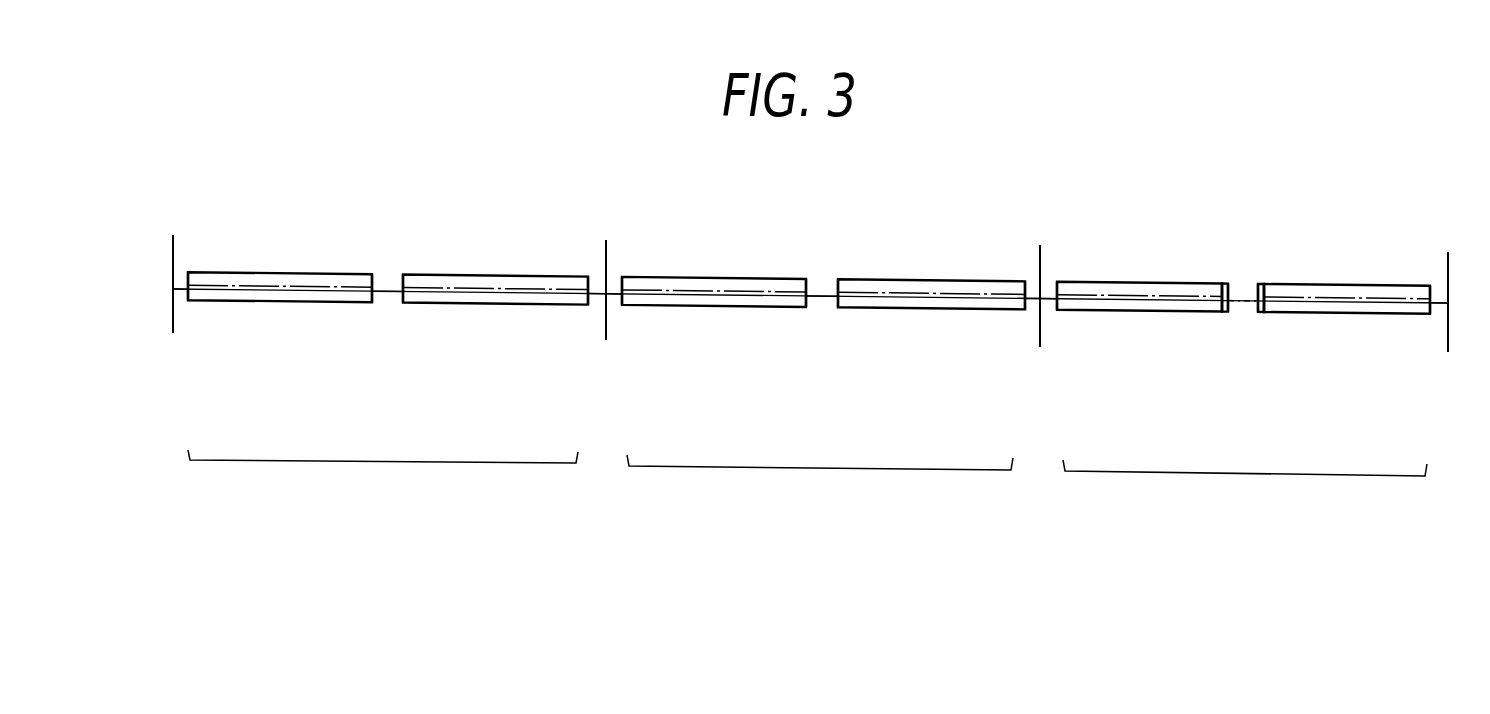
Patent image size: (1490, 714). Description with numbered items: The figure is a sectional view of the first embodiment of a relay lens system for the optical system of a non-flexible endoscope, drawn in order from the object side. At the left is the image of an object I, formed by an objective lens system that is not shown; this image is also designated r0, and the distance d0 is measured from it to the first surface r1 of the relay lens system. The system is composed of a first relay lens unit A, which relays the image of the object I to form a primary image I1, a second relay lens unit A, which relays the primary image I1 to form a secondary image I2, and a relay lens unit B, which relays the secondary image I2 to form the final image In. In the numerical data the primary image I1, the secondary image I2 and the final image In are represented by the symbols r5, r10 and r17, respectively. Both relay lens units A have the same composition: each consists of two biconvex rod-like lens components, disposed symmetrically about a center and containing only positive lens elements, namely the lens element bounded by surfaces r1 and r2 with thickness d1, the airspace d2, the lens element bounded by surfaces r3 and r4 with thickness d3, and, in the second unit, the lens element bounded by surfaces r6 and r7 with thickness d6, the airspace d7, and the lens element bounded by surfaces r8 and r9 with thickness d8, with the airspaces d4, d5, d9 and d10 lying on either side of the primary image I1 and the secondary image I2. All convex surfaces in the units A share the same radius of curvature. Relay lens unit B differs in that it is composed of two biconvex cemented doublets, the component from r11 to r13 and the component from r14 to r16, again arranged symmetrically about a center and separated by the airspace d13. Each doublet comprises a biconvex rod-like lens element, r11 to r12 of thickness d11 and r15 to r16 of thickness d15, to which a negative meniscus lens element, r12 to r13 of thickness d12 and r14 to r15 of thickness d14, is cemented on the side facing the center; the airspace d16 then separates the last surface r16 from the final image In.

The image of an object r0 is at (172, 255).
The first surface r1 is at (198, 272).
The lens surface r2 is at (372, 276).
The lens surface r3 is at (403, 276).
The lens surface r4 is at (586, 277).
The primary image r5 is at (606, 262).
The lens surface r6 is at (624, 277).
The lens surface r7 is at (803, 280).
The lens surface r8 is at (840, 280).
The lens surface r9 is at (1024, 283).
The secondary image r10 is at (1040, 261).
The lens surface r11 is at (1060, 284).
The cemented surface r12 is at (1224, 288).
The lens surface r13 is at (1230, 289).
The lens surface r14 is at (1259, 288).
The cemented surface r15 is at (1268, 288).
The lens surface r16 is at (1420, 288).
The final image r17 is at (1448, 283).
The distance from the image of the object to the first surface d0 is at (180, 290).
The lens thickness d1 is at (278, 290).
The airspace d2 is at (388, 290).
The lens thickness d3 is at (472, 292).
The airspace d4 is at (598, 292).
The airspace d5 is at (611, 292).
The lens thickness d6 is at (708, 294).
The airspace d7 is at (819, 294).
The lens thickness d8 is at (920, 296).
The airspace d9 is at (1030, 297).
The airspace d10 is at (1048, 298).
The lens thickness d11 is at (1143, 302).
The lens thickness d12 is at (1222, 305).
The airspace d13 is at (1240, 300).
The lens thickness d14 is at (1265, 305).
The lens thickness d15 is at (1340, 302).
The airspace d16 is at (1440, 303).
The image of an object I is at (173, 333).
The primary image I1 is at (606, 340).
The secondary image I2 is at (1040, 347).
The final image In is at (1448, 352).
The relay lens unit A is at (600, 479).
The relay lens unit B is at (1245, 488).